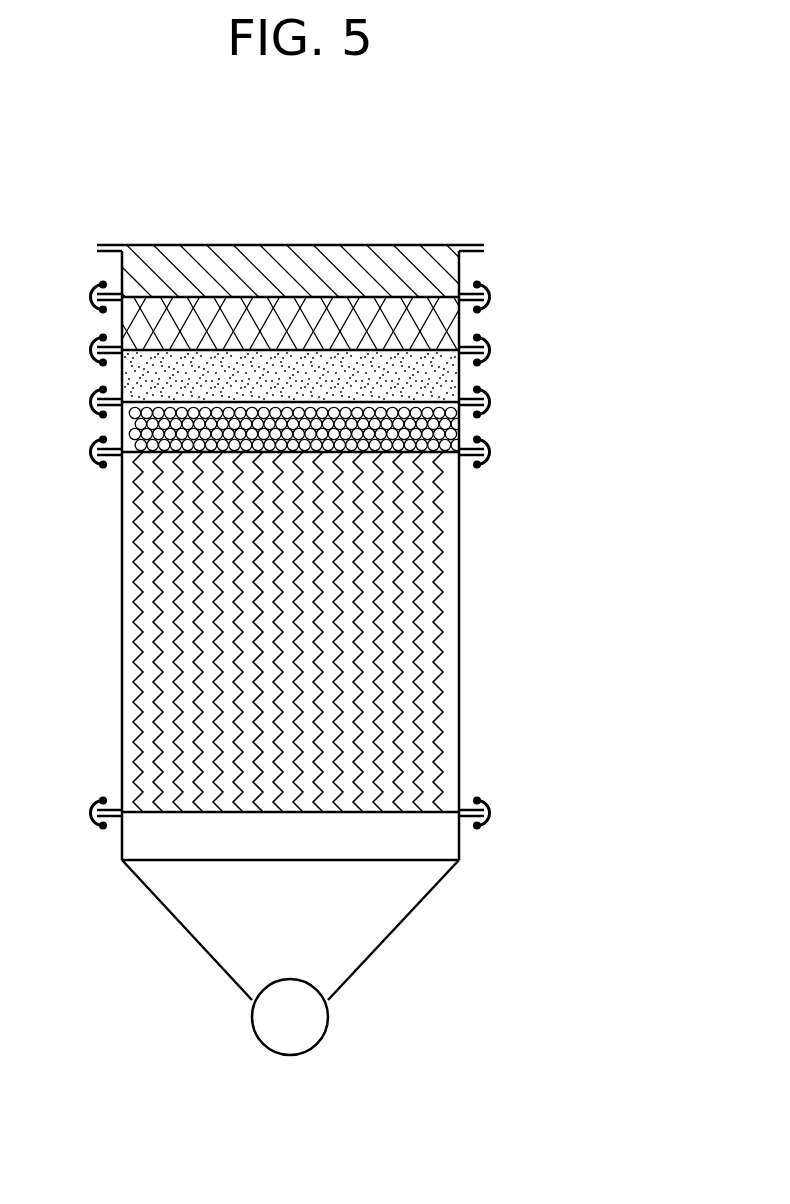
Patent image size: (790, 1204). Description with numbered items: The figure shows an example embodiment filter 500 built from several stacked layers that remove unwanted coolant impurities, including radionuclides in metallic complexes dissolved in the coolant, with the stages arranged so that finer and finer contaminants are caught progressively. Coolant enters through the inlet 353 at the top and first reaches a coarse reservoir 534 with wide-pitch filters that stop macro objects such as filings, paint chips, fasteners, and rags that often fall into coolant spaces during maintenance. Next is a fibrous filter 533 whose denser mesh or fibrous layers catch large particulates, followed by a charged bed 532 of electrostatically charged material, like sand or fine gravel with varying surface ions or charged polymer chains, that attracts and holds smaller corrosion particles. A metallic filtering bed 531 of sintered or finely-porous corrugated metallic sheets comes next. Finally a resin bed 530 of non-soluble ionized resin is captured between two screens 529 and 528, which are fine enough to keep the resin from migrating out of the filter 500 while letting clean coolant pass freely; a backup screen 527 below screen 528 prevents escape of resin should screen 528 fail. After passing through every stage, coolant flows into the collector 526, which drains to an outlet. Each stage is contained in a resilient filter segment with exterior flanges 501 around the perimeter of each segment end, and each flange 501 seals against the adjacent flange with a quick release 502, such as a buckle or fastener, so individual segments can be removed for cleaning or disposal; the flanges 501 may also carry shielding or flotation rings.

The filter 500 is at (83, 133).
The inlet 353 is at (155, 244).
The coarse reservoir 534 is at (357, 258).
The fibrous filter 533 is at (424, 298).
The charged bed 532 is at (437, 370).
The metallic filtering bed 531 is at (432, 433).
The screen 529 is at (160, 455).
The resin bed 530 is at (436, 688).
The screen 528 is at (418, 812).
The backup screen 527 is at (424, 858).
The collector 526 is at (360, 940).
The exterior flange 501 is at (486, 288).
The quick release 502 is at (538, 459).